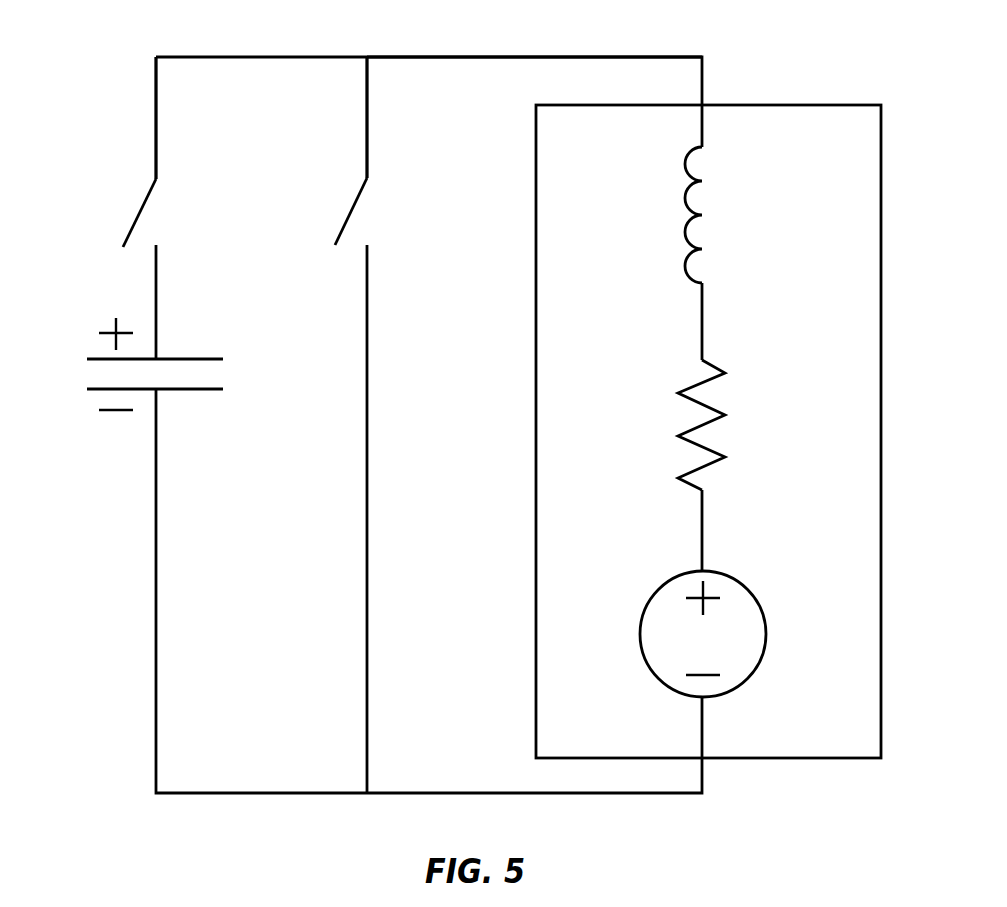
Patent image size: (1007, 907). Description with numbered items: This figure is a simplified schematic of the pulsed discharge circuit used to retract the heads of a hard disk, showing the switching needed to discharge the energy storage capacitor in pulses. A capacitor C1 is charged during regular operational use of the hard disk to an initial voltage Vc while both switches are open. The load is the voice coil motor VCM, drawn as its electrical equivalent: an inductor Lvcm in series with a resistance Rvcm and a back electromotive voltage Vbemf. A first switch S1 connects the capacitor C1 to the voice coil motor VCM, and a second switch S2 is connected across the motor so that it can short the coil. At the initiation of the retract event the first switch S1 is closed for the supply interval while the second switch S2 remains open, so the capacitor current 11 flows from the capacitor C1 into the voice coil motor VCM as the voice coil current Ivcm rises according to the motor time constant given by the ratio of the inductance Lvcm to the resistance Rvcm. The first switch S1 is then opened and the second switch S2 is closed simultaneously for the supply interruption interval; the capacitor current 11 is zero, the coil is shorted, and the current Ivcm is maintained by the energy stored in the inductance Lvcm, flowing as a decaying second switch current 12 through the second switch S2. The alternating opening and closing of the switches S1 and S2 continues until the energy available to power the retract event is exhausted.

The current through switch S1 / capacitor branch 11 is at (126, 77).
The current through switch S2 branch 12 is at (393, 83).
The first switch S1 is at (156, 232).
The second switch S2 is at (370, 234).
The capacitor C1 is at (181, 376).
The initial voltage Vc is at (84, 364).
The voice coil motor VCM is at (777, 105).
The inductor Lvcm is at (745, 215).
The resistance Rvcm is at (754, 425).
The back electromotive voltage Vbemf is at (734, 609).
The voice coil current Ivcm is at (672, 38).